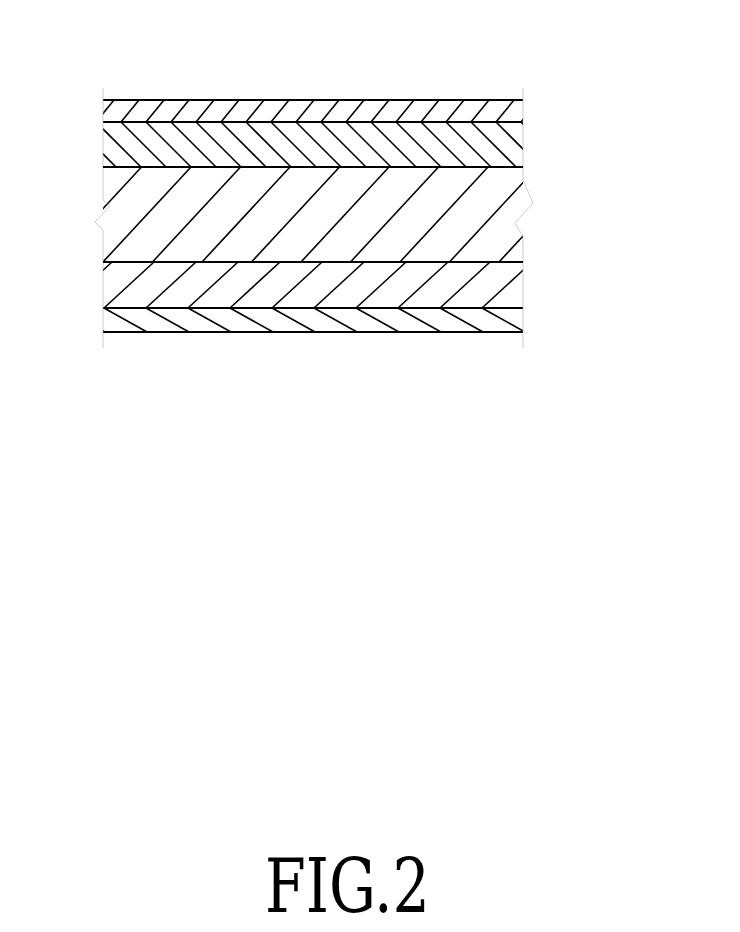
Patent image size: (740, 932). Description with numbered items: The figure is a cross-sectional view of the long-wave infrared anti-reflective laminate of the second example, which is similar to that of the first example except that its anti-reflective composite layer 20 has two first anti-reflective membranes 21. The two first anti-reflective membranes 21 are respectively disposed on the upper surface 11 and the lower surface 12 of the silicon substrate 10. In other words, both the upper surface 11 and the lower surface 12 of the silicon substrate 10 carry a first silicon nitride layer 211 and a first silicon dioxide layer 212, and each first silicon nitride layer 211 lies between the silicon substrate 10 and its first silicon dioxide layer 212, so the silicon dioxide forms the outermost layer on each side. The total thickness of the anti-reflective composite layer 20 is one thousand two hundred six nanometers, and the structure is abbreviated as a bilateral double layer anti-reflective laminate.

The silicon substrate 10 is at (507, 193).
The upper surface 11 is at (145, 160).
The lower surface 12 is at (112, 275).
The anti-reflective composite layer 20 is at (640, 102).
The first anti-reflective membrane 21 is at (546, 100).
The first silicon nitride layer 211 is at (216, 130).
The first silicon dioxide layer 212 is at (152, 107).